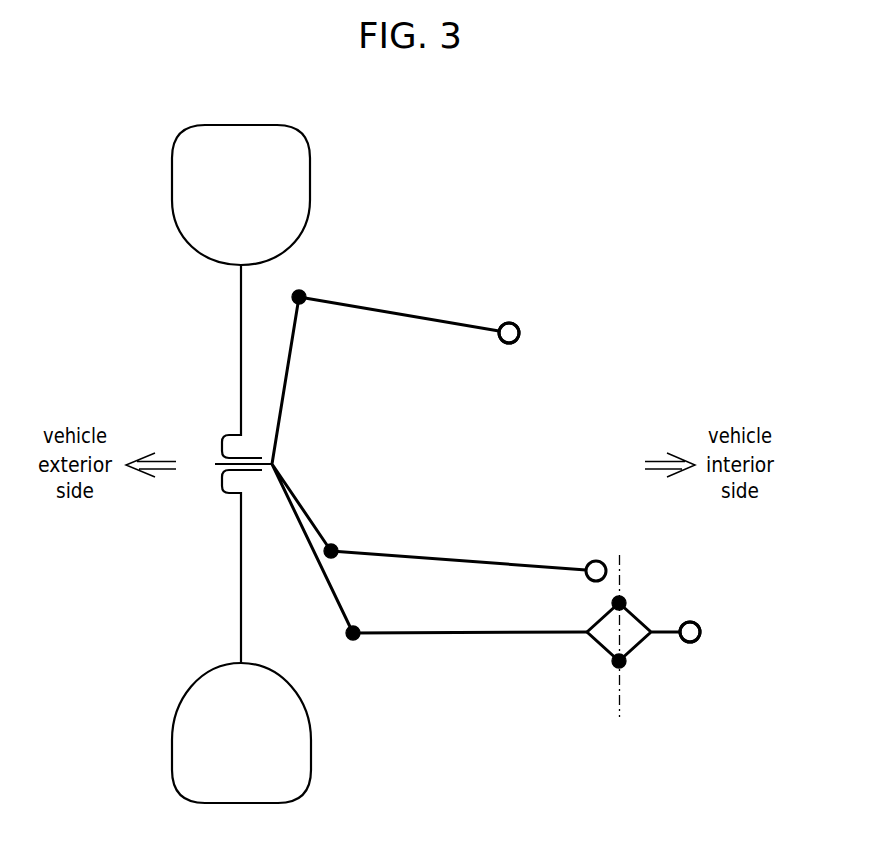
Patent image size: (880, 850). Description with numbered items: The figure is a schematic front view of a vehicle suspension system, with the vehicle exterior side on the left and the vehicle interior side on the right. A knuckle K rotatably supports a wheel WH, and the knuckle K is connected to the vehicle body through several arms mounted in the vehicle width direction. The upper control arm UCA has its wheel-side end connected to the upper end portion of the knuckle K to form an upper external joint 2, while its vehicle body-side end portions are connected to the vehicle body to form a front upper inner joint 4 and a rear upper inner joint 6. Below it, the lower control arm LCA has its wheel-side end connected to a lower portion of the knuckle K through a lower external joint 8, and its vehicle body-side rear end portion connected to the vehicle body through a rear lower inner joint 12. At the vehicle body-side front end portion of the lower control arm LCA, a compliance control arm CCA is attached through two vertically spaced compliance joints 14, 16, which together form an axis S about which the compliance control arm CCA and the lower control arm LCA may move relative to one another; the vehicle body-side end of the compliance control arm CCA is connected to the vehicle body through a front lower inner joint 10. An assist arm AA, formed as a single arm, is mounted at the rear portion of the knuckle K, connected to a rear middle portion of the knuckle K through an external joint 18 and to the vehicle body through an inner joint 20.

The upper external joint 2 is at (308, 288).
The front upper inner joint 4 is at (514, 305).
The rear upper inner joint 6 is at (508, 322).
The lower external joint 8 is at (357, 641).
The front lower inner joint 10 is at (690, 645).
The rear lower inner joint 12 is at (700, 669).
The upper compliance joint 14 is at (624, 594).
The lower compliance joint 16 is at (613, 669).
The external joint 18 is at (338, 541).
The inner joint 20 is at (596, 560).
The knuckle K is at (287, 378).
The wheel WH is at (172, 745).
The upper control arm UCA is at (397, 313).
The lower control arm LCA is at (497, 640).
The assist arm AA is at (464, 560).
The compliance control arm CCA is at (638, 618).
The axis S is at (621, 702).